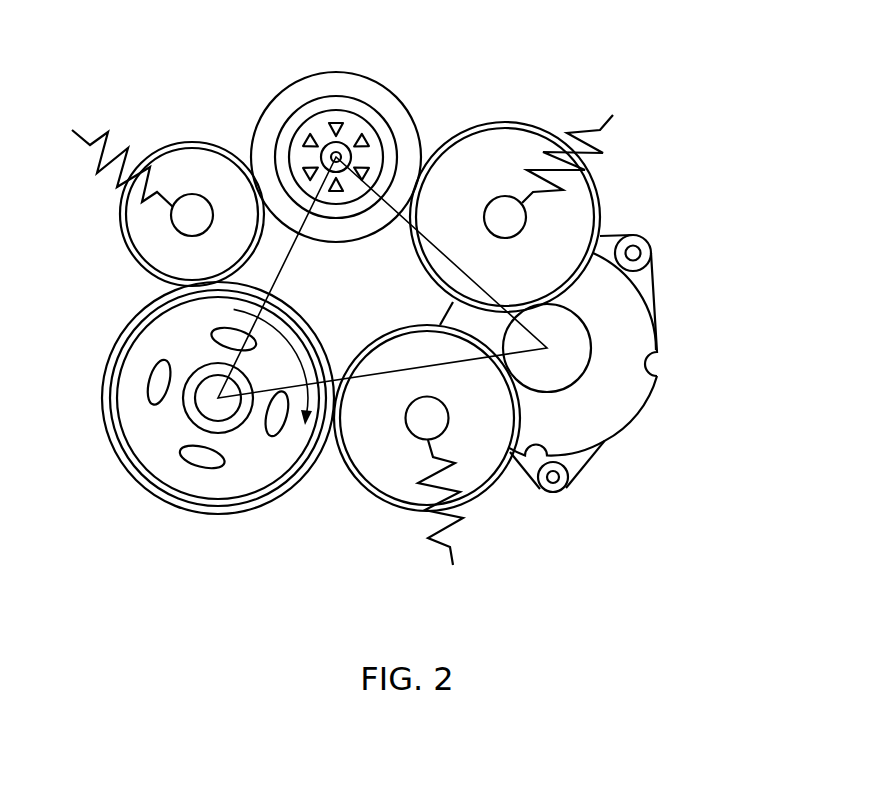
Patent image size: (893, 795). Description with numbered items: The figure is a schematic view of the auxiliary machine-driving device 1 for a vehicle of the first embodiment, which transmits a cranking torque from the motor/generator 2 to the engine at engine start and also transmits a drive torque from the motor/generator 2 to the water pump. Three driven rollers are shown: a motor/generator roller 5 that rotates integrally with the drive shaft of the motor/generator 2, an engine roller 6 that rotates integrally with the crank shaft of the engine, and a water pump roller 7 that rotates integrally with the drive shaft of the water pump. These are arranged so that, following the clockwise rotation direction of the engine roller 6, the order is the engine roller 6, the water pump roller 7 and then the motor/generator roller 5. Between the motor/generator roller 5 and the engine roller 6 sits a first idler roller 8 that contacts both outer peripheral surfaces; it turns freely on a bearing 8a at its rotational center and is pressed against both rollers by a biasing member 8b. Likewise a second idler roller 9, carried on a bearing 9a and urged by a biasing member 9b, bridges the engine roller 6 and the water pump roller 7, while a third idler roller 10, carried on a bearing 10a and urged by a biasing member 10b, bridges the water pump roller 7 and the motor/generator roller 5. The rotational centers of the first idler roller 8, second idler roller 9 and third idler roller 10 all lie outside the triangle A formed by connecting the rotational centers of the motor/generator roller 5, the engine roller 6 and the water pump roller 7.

The auxiliary machine-driving device for a vehicle 1 is at (522, 84).
The motor/generator 2 is at (632, 304).
The motor/generator roller 5 is at (590, 372).
The engine roller 6 is at (107, 368).
The water pump roller 7 is at (380, 80).
The first idler roller 8 is at (362, 492).
The bearing 8a is at (430, 418).
The biasing member 8b is at (448, 553).
The second idler roller 9 is at (190, 142).
The bearing 9a is at (181, 217).
The biasing member 9b is at (82, 128).
The third idler roller 10 is at (600, 208).
The bearing 10a is at (513, 215).
The biasing member 10b is at (614, 128).
The triangle A is at (285, 268).